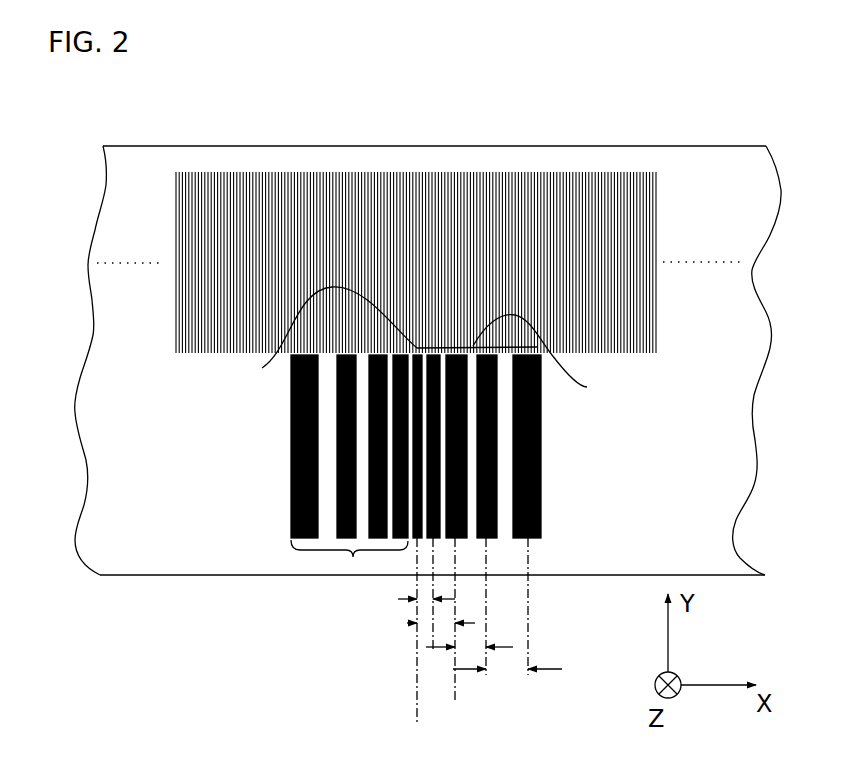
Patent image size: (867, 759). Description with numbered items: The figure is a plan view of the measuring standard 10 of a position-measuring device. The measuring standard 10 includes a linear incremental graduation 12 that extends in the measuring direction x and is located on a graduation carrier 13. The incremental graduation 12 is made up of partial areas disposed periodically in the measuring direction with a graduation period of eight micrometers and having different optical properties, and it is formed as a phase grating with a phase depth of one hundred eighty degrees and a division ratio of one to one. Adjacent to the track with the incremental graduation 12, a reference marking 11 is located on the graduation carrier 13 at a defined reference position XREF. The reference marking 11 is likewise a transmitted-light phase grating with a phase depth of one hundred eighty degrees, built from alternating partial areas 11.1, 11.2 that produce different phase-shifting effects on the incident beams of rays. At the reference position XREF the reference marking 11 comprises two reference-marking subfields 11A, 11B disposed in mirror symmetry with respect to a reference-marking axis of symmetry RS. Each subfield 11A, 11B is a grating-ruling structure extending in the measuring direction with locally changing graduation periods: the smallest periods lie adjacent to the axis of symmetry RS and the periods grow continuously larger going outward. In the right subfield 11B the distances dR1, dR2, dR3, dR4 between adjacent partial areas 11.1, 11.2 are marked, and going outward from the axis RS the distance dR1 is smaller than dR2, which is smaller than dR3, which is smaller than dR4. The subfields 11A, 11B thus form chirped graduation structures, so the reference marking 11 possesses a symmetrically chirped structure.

The measuring standard 10 is at (384, 146).
The graduation carrier 13 is at (688, 172).
The incremental graduation 12 is at (172, 310).
The reference-marking axis of symmetry RS is at (384, 341).
The reference marking 11 is at (417, 478).
The partial area 11.1 is at (293, 521).
The partial area 11.2 is at (330, 530).
The reference-marking subfield 11A is at (318, 498).
The reference-marking subfield 11B is at (552, 360).
The reference position XREF is at (417, 702).
The distance between adjacent partial areas dR1 is at (417, 599).
The distance between adjacent partial areas dR2 is at (443, 624).
The distance between adjacent partial areas dR3 is at (474, 647).
The distance between adjacent partial areas dR4 is at (511, 668).